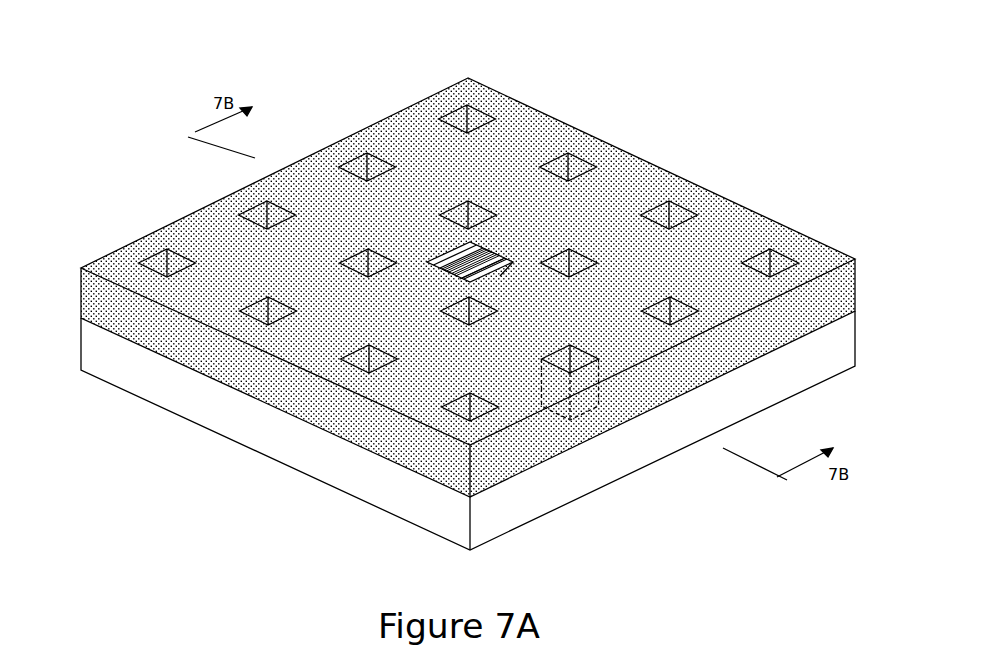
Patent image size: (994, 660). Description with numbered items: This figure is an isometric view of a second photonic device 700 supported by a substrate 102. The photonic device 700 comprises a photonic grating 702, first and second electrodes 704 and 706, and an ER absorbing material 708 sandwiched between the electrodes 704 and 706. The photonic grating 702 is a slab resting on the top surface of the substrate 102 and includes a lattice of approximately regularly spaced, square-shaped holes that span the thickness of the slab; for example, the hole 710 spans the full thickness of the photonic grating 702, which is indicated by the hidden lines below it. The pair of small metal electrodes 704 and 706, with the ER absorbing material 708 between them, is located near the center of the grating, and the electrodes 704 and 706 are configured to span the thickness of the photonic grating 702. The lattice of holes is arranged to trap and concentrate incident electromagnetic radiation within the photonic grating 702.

The second photonic device 700 is at (470, 284).
The photonic grating 702 is at (733, 214).
The substrate 102 is at (796, 376).
The first electrode 704 is at (460, 251).
The second electrode 706 is at (488, 272).
The ER absorbing material 708 is at (496, 249).
The hole 710 is at (587, 370).